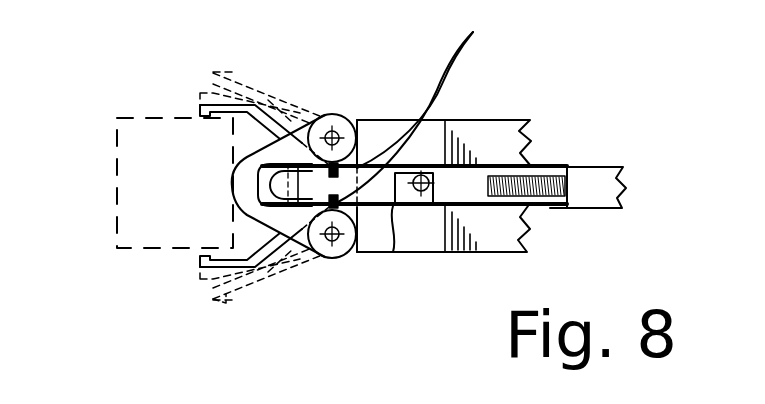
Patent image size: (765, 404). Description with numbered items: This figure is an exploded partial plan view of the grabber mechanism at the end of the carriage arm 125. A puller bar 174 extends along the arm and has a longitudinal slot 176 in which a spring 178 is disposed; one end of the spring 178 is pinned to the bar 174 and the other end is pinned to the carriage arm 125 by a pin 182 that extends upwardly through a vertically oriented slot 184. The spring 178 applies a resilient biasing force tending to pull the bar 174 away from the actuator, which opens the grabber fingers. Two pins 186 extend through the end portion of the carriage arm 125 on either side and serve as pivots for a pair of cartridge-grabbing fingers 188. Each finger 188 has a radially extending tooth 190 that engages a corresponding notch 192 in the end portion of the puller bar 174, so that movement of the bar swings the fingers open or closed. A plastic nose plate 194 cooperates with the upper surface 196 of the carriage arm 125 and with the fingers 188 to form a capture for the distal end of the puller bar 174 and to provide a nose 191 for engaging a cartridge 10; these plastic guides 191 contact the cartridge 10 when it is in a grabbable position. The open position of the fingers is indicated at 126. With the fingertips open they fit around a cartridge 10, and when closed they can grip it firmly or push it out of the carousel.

The cartridge 10 is at (121, 219).
The carriage arm 125 is at (530, 115).
The jaw open position 126 is at (264, 72).
The puller bar 174 is at (622, 181).
The longitudinal slot 176 is at (560, 211).
The spring 178 is at (553, 168).
The pin 182 is at (440, 160).
The vertically oriented slot 184 is at (395, 253).
The pins 186 is at (350, 116).
The cartridge-grabbing fingers 188 is at (232, 134).
The radially extending tooth 190 is at (236, 200).
The nose 191 is at (236, 176).
The notch 192 is at (425, 109).
The plastic nose plate 194 is at (318, 263).
The upper surface 196 is at (425, 248).